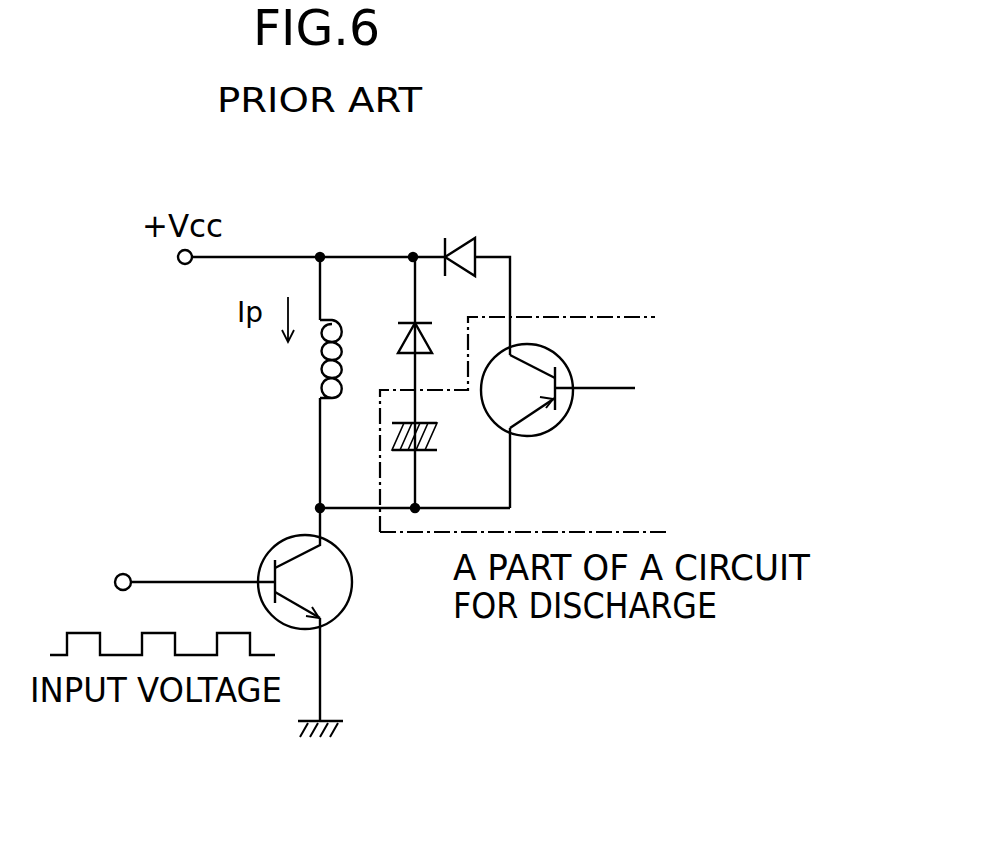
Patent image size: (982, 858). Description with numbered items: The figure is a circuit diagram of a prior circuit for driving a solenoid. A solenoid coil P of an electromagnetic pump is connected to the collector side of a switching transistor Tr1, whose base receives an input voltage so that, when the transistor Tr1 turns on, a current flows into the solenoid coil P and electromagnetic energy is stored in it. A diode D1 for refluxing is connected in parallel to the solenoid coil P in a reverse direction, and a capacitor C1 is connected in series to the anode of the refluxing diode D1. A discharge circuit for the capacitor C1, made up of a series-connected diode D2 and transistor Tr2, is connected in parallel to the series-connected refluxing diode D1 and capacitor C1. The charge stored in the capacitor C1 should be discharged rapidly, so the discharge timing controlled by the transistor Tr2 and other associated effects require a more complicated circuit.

The diode for refluxing D1 is at (403, 345).
The diode D2 is at (458, 242).
The capacitor C1 is at (400, 433).
The solenoid coil P is at (318, 364).
The transistor for switching Tr1 is at (352, 597).
The transistor Tr2 is at (545, 433).